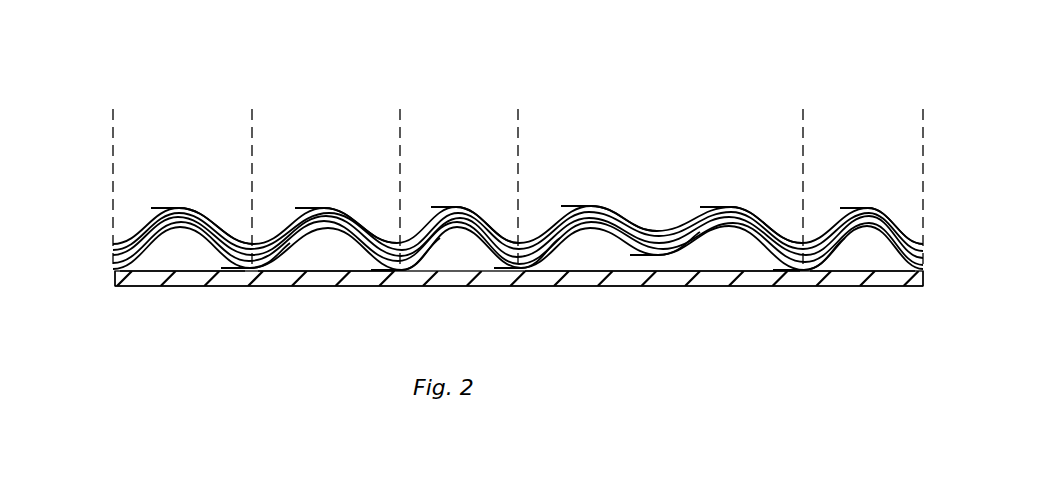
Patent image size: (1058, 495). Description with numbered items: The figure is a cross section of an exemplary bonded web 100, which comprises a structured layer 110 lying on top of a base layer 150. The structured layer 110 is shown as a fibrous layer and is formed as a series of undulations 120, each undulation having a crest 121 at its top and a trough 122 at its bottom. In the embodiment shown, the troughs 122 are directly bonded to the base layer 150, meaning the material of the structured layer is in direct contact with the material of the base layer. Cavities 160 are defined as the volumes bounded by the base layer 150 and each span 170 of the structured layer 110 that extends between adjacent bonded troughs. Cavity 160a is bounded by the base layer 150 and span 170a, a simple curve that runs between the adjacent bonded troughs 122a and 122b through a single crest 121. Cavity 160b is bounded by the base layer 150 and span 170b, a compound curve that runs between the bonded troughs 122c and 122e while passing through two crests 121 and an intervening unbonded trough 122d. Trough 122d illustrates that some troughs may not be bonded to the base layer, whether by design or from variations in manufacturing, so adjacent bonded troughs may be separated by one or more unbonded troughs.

The bonded web 100 is at (198, 86).
The structured layer 110 is at (108, 234).
The undulations 120 is at (212, 215).
The crest 121 is at (334, 214).
The trough 122 is at (115, 276).
The trough 122a is at (260, 257).
The trough 122b is at (395, 267).
The trough 122c is at (515, 267).
The unbonded trough 122d is at (657, 253).
The trough 122e is at (803, 267).
The base layer 150 is at (143, 278).
The cavities 160 is at (179, 255).
The cavity 160a is at (330, 255).
The cavity 160b is at (598, 253).
The span 170 is at (250, 128).
The span 170a is at (398, 128).
The span 170b is at (801, 128).